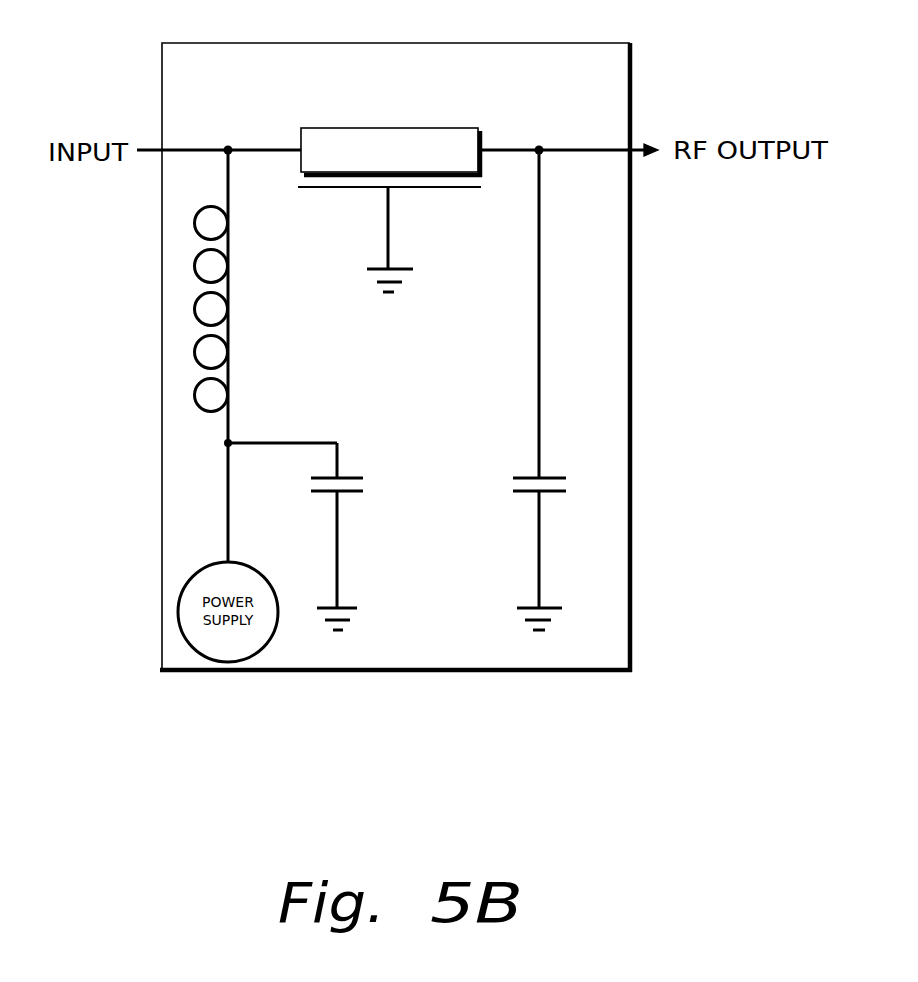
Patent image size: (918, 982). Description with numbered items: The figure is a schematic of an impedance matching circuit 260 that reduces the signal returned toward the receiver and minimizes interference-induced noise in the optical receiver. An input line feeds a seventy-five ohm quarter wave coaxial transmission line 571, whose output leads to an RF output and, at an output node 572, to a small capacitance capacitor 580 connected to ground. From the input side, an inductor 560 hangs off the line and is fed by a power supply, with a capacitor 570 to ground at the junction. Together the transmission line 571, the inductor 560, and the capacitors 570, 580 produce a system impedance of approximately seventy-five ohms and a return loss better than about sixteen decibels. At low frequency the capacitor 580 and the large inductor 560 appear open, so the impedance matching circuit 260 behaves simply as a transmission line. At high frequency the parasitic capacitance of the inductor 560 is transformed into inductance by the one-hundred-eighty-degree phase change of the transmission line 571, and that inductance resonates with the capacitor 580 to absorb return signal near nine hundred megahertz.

The impedance matching circuit 260 is at (442, 43).
The inductor 560 is at (231, 288).
The capacitor 570 is at (353, 477).
The 75Ω quarter wave coaxial transmission line 571 is at (299, 139).
The output node 572 is at (583, 148).
The small capacitance capacitor 580 is at (556, 477).